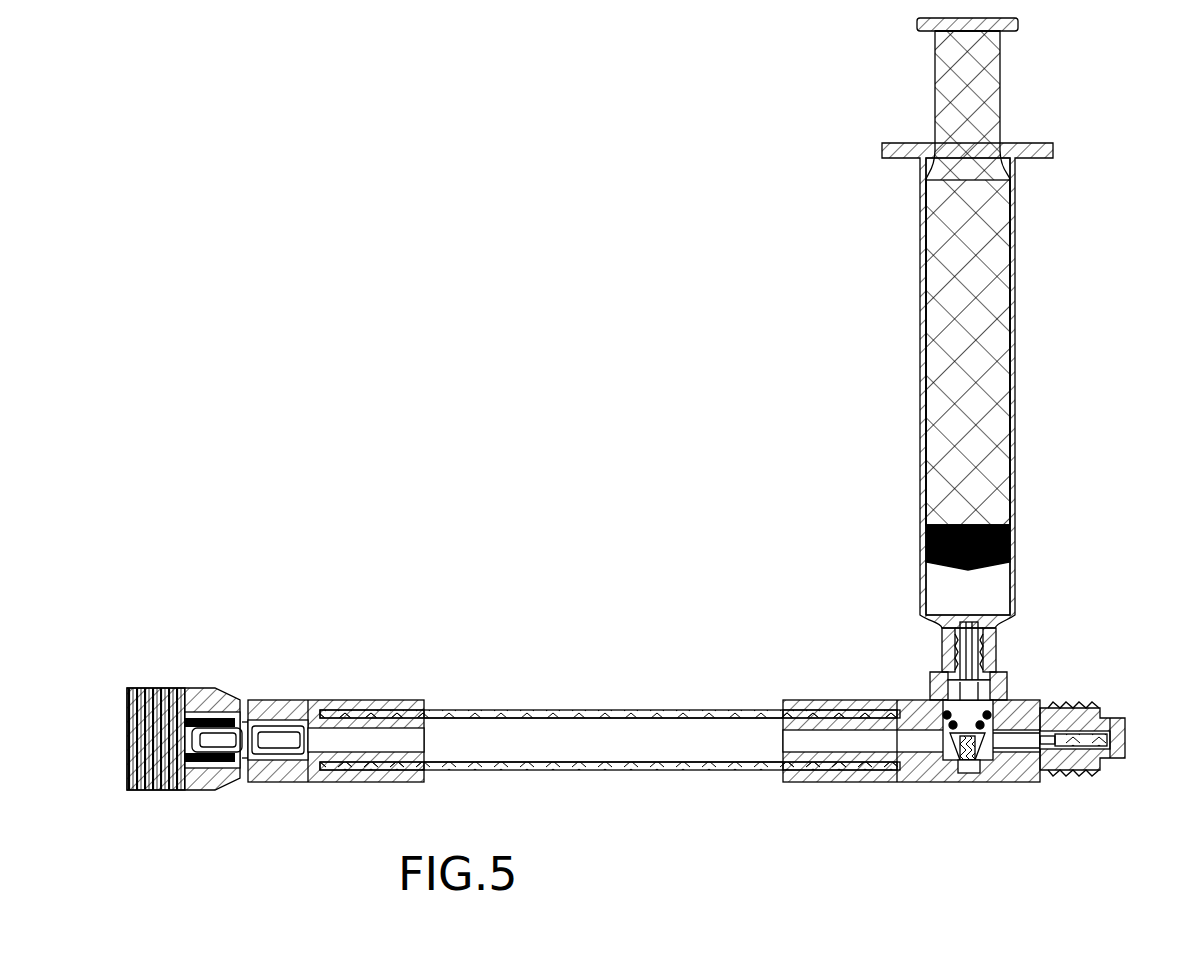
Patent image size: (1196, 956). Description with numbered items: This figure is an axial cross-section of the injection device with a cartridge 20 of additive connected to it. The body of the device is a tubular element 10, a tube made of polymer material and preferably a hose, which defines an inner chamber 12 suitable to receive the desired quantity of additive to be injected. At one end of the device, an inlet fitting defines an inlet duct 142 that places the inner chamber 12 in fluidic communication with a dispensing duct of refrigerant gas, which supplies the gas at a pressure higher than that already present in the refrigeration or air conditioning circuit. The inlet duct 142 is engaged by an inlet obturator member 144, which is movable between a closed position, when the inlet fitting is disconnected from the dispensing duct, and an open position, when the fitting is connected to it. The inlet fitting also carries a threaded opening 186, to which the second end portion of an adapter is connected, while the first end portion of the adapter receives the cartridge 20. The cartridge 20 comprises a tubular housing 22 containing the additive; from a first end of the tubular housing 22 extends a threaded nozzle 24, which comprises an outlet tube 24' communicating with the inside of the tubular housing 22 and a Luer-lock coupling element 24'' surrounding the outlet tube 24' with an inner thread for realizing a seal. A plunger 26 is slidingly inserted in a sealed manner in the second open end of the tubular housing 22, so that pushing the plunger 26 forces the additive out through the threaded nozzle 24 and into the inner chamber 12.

The tubular element 10 is at (580, 712).
The inner chamber 12 is at (605, 760).
The cartridge 20 is at (885, 365).
The tubular housing 22 is at (1017, 585).
The threaded nozzle 24 is at (1044, 641).
The outlet tube 24' is at (914, 588).
The Luer-lock coupling element 24'' is at (877, 615).
The plunger 26 is at (1000, 110).
The inlet duct 142 is at (893, 738).
The inlet obturator member 144 is at (1090, 770).
The threaded opening 186 is at (930, 690).